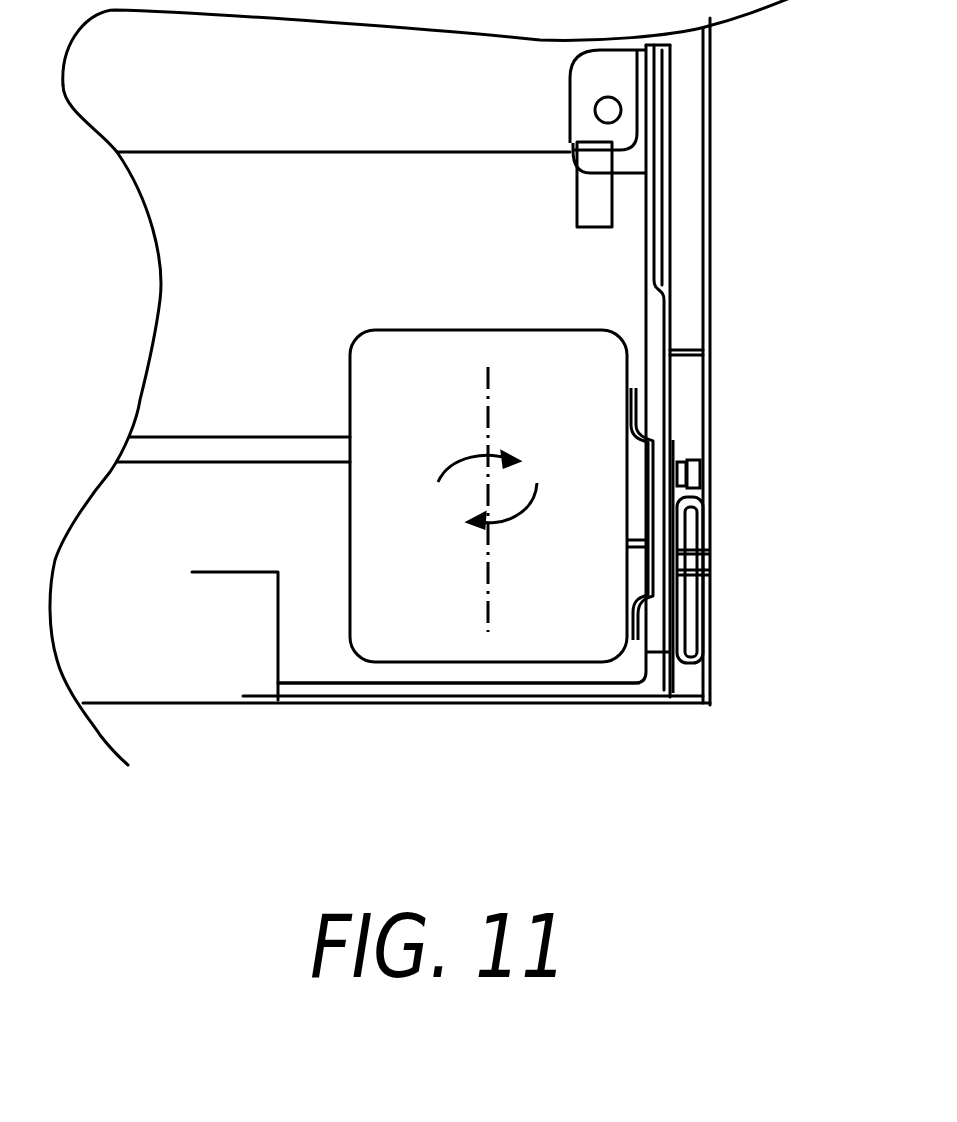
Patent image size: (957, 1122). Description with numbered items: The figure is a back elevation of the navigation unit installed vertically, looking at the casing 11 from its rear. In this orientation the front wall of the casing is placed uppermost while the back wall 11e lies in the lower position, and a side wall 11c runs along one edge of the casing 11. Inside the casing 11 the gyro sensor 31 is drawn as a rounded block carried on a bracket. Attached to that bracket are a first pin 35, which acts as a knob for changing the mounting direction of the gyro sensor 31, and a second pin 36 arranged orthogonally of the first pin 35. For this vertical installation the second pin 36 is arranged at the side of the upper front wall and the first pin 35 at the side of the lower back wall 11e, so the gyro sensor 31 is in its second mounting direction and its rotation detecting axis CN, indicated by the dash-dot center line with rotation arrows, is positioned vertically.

The casing 11 is at (750, 95).
The side wall 11c is at (710, 207).
The back wall 11e is at (470, 705).
The gyro sensor 31 is at (435, 328).
The first pin 35 is at (710, 567).
The second pin 36 is at (710, 473).
The rotation detecting axis CN is at (487, 565).